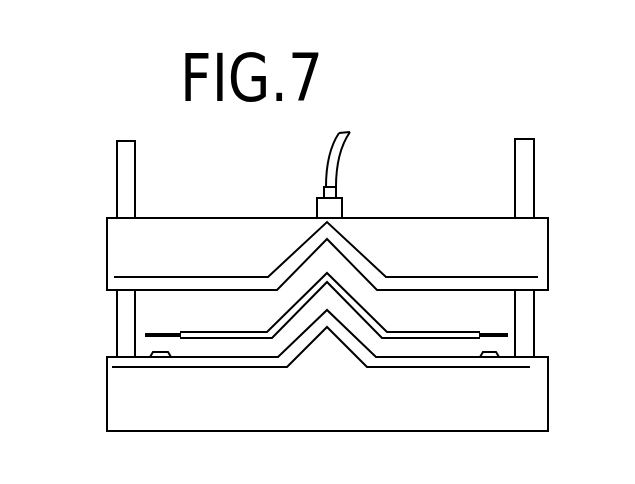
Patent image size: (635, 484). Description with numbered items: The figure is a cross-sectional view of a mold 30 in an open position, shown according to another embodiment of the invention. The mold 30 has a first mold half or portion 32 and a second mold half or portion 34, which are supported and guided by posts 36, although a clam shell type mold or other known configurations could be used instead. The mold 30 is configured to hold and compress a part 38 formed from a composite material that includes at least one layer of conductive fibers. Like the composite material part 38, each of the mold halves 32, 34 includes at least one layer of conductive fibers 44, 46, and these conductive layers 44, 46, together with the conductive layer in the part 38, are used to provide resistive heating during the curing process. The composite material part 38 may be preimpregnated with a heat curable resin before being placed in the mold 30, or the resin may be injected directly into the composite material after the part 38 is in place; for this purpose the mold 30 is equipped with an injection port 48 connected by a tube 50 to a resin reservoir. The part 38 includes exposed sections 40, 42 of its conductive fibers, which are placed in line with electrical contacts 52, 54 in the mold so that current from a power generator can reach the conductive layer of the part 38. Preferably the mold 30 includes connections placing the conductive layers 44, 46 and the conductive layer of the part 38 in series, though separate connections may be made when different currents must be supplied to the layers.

The mold 30 is at (80, 390).
The first mold half 32 is at (107, 400).
The second mold half 34 is at (105, 255).
The posts 36 is at (128, 188).
The composite material part 38 is at (423, 340).
The exposed section of conductive fibers 40 is at (160, 334).
The exposed section of conductive fibers 42 is at (497, 332).
The layer of conductive fibers 44 is at (530, 367).
The layer of conductive fibers 46 is at (517, 276).
The injection port 48 is at (340, 205).
The tube 50 is at (347, 152).
The electrical contact 52 is at (150, 352).
The electrical contact 54 is at (497, 352).